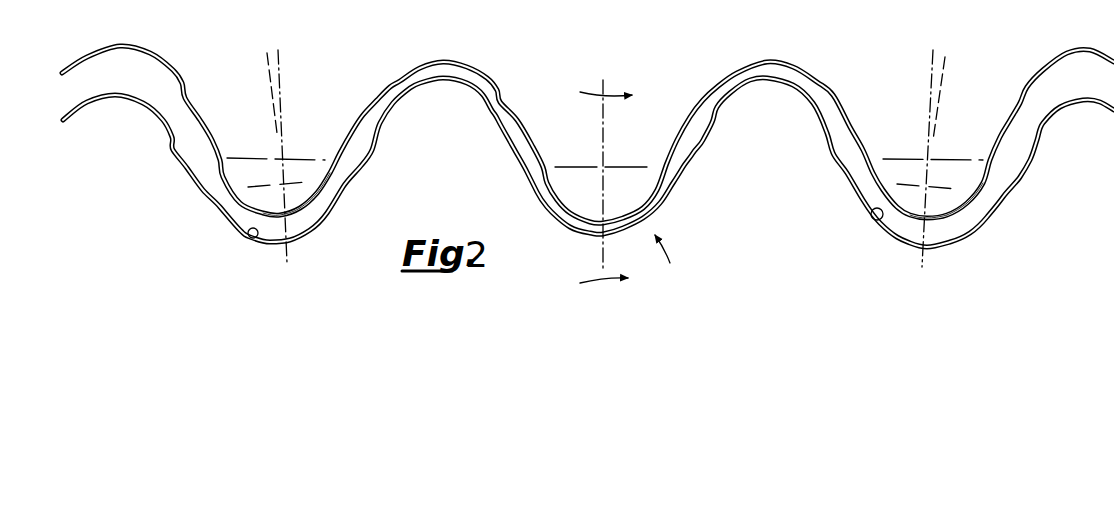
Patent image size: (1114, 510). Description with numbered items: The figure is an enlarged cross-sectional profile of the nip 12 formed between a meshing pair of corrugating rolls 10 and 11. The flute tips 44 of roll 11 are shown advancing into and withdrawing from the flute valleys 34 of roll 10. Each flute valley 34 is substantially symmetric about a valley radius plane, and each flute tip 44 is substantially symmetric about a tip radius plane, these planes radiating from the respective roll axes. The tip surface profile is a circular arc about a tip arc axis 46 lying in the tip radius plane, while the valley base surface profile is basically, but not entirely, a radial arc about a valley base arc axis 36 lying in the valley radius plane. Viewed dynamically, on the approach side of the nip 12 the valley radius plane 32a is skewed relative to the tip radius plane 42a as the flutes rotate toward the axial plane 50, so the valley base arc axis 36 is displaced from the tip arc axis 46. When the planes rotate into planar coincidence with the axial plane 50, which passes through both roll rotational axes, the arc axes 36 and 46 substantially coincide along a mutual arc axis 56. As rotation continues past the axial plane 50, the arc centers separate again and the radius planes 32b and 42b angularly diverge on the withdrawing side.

The corrugating roll 10 is at (858, 265).
The corrugating roll 11 is at (893, 111).
The nip 12 is at (667, 264).
The valley radius plane 32a is at (287, 257).
The valley radius plane 32b is at (920, 257).
The flute valley 34 is at (250, 238).
The valley base arc axis 36 is at (280, 180).
The tip radius plane 42a is at (280, 74).
The tip radius plane 42b is at (930, 73).
The flute tip 44 is at (315, 203).
The tip arc axis 46 is at (275, 158).
The axial plane 50 is at (608, 125).
The mutual arc axis 56 is at (607, 167).